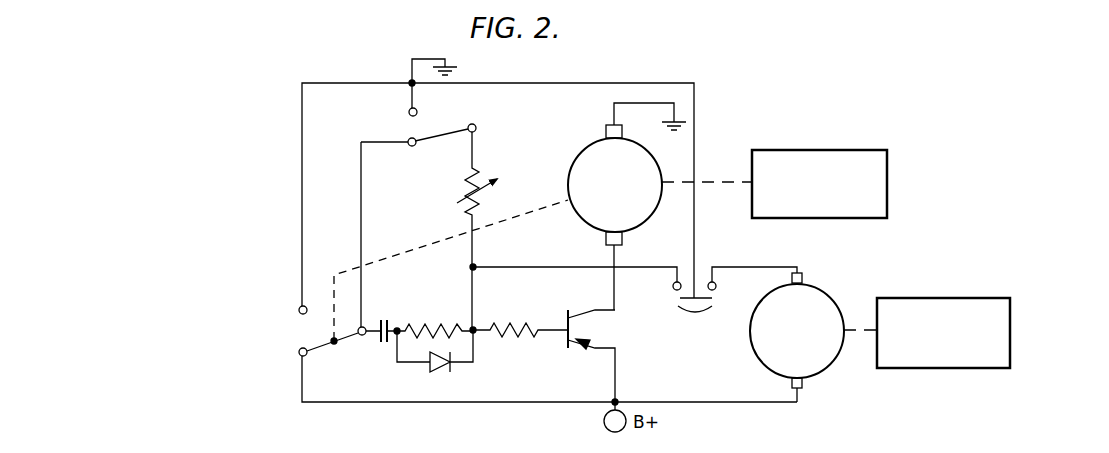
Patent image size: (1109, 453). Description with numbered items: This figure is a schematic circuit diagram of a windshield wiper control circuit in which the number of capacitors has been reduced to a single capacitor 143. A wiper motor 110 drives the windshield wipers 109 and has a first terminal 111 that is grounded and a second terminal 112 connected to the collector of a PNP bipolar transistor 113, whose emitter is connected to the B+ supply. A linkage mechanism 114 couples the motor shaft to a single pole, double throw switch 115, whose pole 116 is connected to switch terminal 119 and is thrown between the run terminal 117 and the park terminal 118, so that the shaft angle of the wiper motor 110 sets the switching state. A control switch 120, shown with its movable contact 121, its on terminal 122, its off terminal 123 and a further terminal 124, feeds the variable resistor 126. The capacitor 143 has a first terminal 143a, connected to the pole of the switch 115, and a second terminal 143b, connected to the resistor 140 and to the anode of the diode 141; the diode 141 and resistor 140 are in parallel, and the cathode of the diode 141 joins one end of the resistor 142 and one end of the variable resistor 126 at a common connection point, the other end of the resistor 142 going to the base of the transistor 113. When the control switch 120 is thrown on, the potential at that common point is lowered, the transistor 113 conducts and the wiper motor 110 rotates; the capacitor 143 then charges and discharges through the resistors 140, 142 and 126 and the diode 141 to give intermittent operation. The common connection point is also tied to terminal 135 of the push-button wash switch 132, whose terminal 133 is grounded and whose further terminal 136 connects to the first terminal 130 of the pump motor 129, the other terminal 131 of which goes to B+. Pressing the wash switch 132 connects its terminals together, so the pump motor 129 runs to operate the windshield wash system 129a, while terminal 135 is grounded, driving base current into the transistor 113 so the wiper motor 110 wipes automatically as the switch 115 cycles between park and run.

The wipers 109 is at (824, 150).
The wiper motor 110 is at (649, 216).
The first terminal 111 is at (605, 131).
The second terminal 112 is at (605, 240).
The PNP bipolar transistor 113 is at (567, 310).
The linkage mechanism 114 is at (401, 250).
The single pole, double throw switch 115 is at (217, 329).
The pole 116 is at (326, 347).
The run terminal 117 is at (299, 310).
The park terminal 118 is at (299, 352).
The switch terminal 119 is at (364, 327).
The control switch 120 is at (424, 135).
The switch blade 121 is at (434, 132).
The ON terminal 122 is at (409, 110).
The OFF terminal 123 is at (418, 150).
The switch terminal 124 is at (476, 128).
The variable resistor 126 is at (461, 189).
The pump motor 129 is at (841, 305).
The windshield wash system 129a is at (931, 298).
The first terminal of pump motor 130 is at (804, 277).
The other terminal of pump motor 131 is at (805, 384).
The wash switch 132 is at (708, 325).
The terminal of wash switch 133 is at (678, 303).
The terminal of wash switch 135 is at (673, 286).
The wash switch contact 136 is at (715, 289).
The resistor 140 is at (456, 322).
The diode 141 is at (445, 370).
The resistor 142 is at (518, 322).
The capacitor 143 is at (378, 327).
The first terminal of capacitor 143a is at (370, 336).
The second terminal of capacitor 143b is at (392, 322).